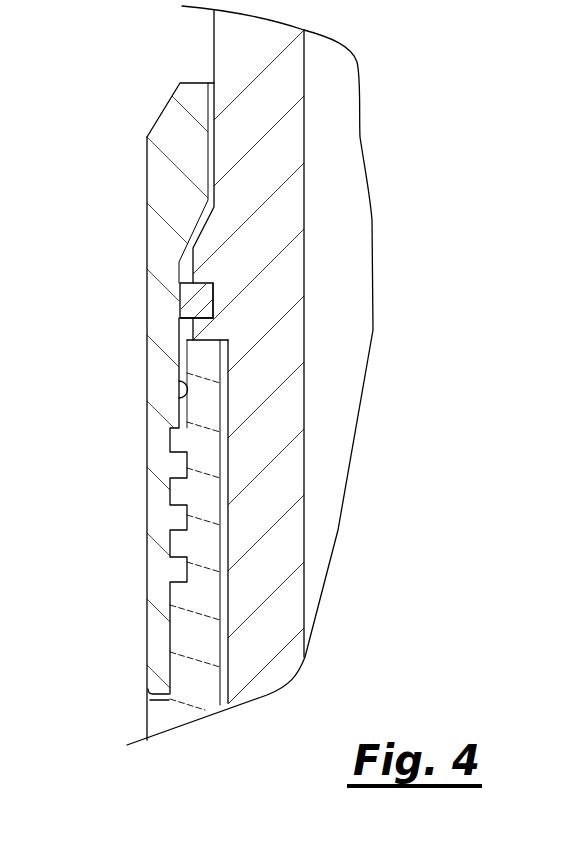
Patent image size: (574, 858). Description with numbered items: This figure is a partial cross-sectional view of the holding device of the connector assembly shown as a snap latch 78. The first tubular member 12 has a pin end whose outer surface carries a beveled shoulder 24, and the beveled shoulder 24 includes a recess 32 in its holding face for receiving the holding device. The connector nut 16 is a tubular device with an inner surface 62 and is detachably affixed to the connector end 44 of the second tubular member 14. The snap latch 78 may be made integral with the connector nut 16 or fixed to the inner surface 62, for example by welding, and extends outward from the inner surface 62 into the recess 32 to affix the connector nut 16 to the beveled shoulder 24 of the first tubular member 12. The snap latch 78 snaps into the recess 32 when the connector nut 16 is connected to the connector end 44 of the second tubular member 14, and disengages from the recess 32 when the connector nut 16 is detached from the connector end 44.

The first tubular member 12 is at (240, 53).
The second tubular member 14 is at (193, 675).
The connector nut 16 is at (155, 521).
The beveled shoulder 24 is at (197, 320).
The recess 32 is at (215, 298).
The connector end 44 is at (205, 542).
The inner surface 62 is at (190, 390).
The snap latch 78 is at (193, 300).